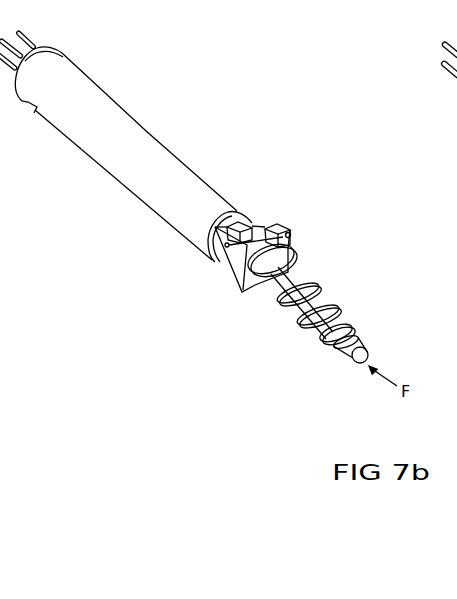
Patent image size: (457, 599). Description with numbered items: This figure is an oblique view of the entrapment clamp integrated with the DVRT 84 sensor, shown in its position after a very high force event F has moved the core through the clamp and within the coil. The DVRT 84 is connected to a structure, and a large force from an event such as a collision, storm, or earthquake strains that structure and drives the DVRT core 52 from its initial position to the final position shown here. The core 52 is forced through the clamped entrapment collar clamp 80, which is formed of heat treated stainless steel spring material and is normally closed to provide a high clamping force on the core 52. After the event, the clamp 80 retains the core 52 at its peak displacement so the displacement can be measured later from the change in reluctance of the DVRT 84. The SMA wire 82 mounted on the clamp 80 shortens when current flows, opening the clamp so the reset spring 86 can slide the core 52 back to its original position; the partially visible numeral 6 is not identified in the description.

The DVRT 84 is at (191, 139).
The entrapment collar clamp 80 is at (225, 263).
The SMA wire 82 is at (250, 247).
The reset spring 86 is at (334, 306).
The DVRT core 52 is at (287, 307).
The partial numeral 6 is at (6, 319).